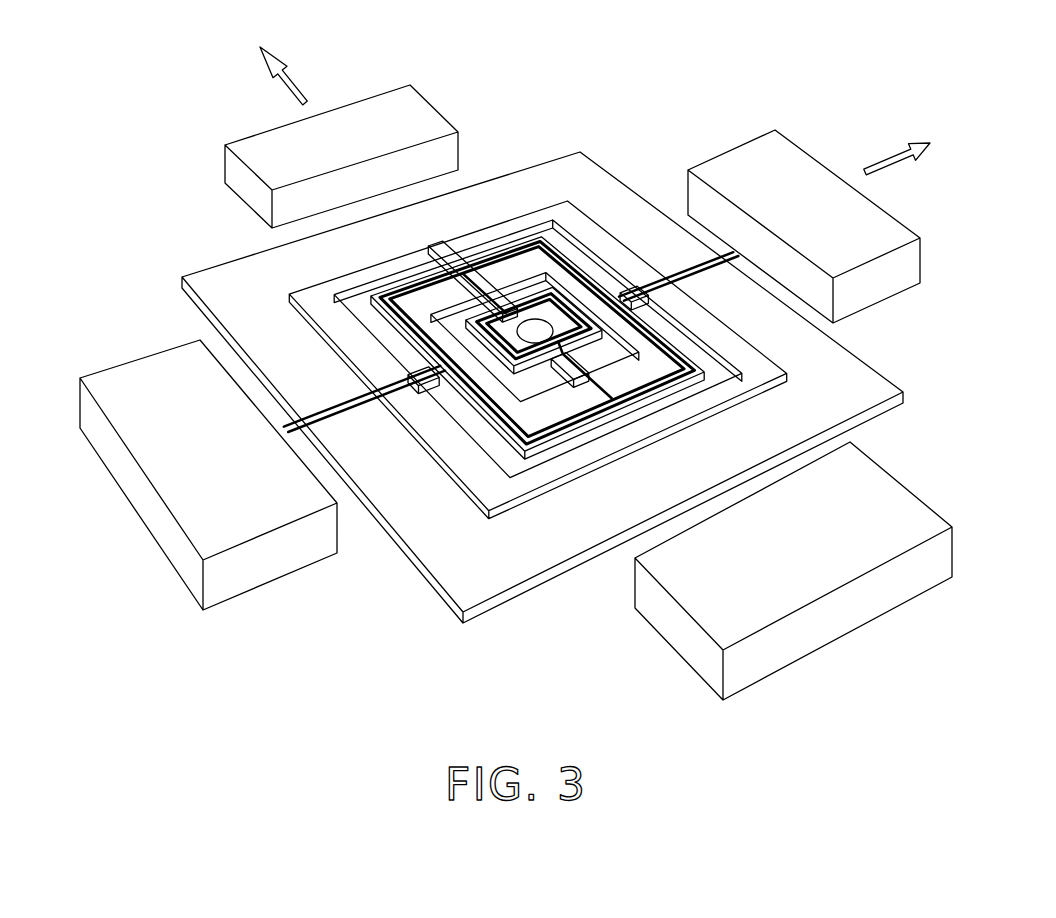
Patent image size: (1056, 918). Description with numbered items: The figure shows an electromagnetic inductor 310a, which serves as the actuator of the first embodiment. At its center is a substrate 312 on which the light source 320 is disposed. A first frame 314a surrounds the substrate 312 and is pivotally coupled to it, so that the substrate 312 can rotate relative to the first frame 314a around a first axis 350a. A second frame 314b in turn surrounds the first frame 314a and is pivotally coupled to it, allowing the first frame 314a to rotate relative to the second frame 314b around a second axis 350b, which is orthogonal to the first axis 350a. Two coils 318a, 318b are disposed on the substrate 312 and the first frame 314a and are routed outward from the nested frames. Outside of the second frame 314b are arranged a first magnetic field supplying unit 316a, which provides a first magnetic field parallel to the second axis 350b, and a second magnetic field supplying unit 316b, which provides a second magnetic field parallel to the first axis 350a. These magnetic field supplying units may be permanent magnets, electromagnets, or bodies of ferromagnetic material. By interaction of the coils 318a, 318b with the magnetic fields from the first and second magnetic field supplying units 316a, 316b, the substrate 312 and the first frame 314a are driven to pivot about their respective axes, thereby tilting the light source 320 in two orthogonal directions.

The electromagnetic inductor 310a is at (1047, 733).
The substrate 312 is at (513, 377).
The first frame 314a is at (507, 470).
The second frame 314b is at (558, 170).
The first magnetic field supplying unit 316a is at (918, 262).
The second magnetic field supplying unit 316b is at (268, 155).
The coil 318a is at (680, 267).
The coil 318b is at (295, 427).
The light source 320 is at (573, 353).
The first axis 350a is at (904, 175).
The second axis 350b is at (280, 95).